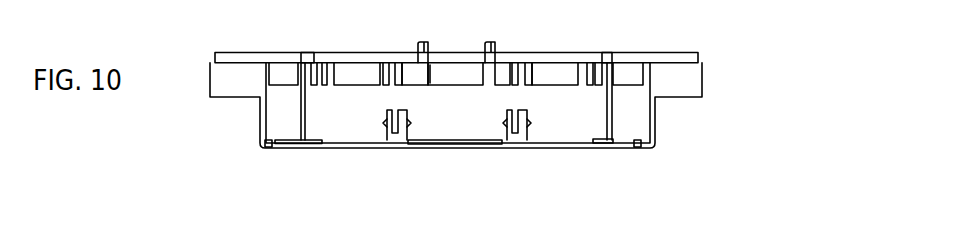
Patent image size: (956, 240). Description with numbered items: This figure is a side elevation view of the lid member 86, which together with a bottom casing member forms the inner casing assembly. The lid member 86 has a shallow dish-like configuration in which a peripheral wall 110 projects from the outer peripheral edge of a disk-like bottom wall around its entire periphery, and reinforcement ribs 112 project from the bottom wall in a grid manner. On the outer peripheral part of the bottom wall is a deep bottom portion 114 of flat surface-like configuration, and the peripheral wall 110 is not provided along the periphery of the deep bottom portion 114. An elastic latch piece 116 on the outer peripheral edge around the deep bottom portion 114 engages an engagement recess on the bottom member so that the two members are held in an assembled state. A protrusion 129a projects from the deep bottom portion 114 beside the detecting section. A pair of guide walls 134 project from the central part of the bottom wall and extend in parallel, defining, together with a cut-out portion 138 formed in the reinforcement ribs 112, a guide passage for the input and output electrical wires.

The lid member 86 is at (698, 52).
The peripheral wall 110 is at (692, 73).
The reinforcement ribs 112 is at (359, 75).
The guide walls 134 is at (420, 47).
The cut-out portion 138 is at (428, 74).
The elastic latch piece 116 is at (385, 126).
The protrusion 129a is at (468, 144).
The deep bottom portion 114 is at (608, 146).